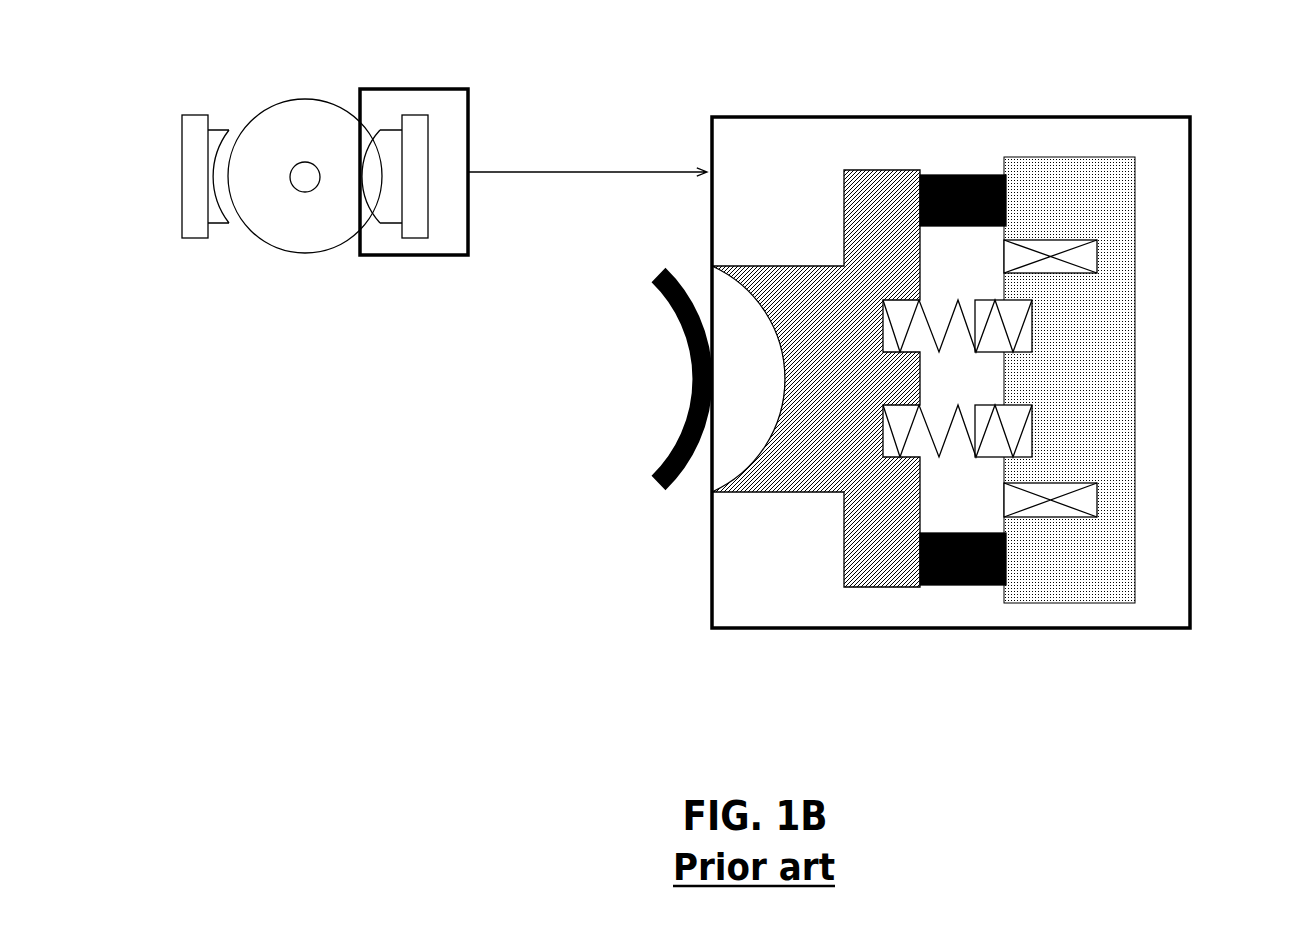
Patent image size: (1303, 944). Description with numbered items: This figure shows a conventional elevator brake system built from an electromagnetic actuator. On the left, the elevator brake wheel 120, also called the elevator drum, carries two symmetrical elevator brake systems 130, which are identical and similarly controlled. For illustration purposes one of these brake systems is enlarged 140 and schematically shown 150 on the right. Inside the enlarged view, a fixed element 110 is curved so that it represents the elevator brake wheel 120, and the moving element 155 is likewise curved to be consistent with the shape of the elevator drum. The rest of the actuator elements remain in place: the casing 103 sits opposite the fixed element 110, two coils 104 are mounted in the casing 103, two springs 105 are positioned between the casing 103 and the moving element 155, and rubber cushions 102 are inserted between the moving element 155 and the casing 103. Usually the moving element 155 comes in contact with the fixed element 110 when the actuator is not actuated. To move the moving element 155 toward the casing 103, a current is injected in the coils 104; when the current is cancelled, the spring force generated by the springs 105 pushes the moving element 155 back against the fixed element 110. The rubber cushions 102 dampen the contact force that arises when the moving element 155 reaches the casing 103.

The rubber cushions 102 is at (968, 146).
The casing 103 is at (1123, 187).
The coils 104 is at (1108, 250).
The springs 105 is at (1032, 424).
The fixed element 110 is at (672, 411).
The elevator brake wheel 120 is at (301, 265).
The elevator brake systems 130 is at (456, 263).
The enlargement 140 is at (622, 172).
The schematic representation of the elevator brake system 150 is at (764, 117).
The moving element 155 is at (775, 511).